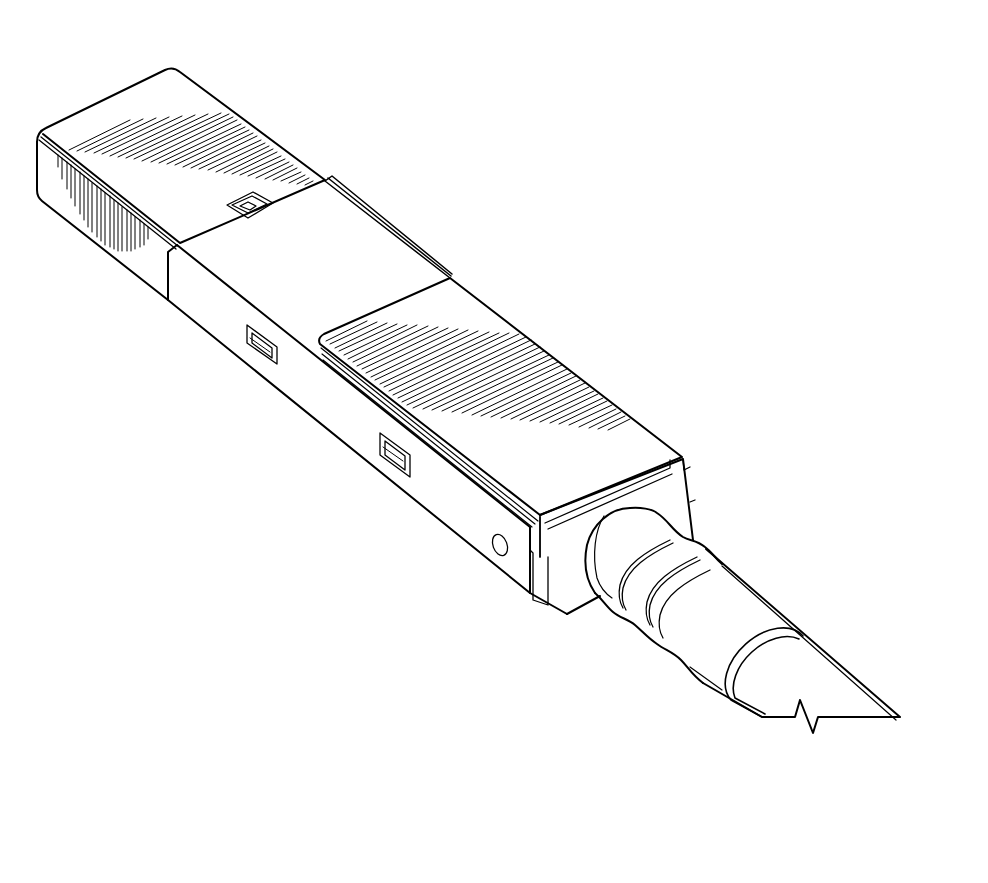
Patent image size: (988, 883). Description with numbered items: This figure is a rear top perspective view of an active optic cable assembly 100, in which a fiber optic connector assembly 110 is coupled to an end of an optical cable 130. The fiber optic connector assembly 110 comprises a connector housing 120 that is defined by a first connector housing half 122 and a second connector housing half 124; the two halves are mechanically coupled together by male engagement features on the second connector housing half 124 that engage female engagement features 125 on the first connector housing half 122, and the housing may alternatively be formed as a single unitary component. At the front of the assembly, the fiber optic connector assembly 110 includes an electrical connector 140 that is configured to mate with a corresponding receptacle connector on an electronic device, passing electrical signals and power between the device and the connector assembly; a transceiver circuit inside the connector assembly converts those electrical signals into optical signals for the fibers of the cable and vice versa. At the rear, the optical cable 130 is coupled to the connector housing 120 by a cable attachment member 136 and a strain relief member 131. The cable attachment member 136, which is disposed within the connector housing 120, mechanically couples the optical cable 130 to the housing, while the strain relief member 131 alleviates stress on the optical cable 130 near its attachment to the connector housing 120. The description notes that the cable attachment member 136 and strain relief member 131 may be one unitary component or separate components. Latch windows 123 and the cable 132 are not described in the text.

The active optic cable assembly 100 is at (540, 223).
The fiber optic connector assembly 110 is at (378, 188).
The connector housing 120 is at (569, 332).
The first connector housing half 122 is at (213, 313).
The latch windows 123 is at (258, 348).
The second connector housing half 124 is at (146, 258).
The female engagement features 125 is at (276, 364).
The optical cable 130 is at (801, 586).
The strain relief member 131 is at (701, 545).
The fiber optic cable 132 is at (826, 652).
The cable attachment member 136 is at (682, 488).
The electrical connector 140 is at (80, 90).